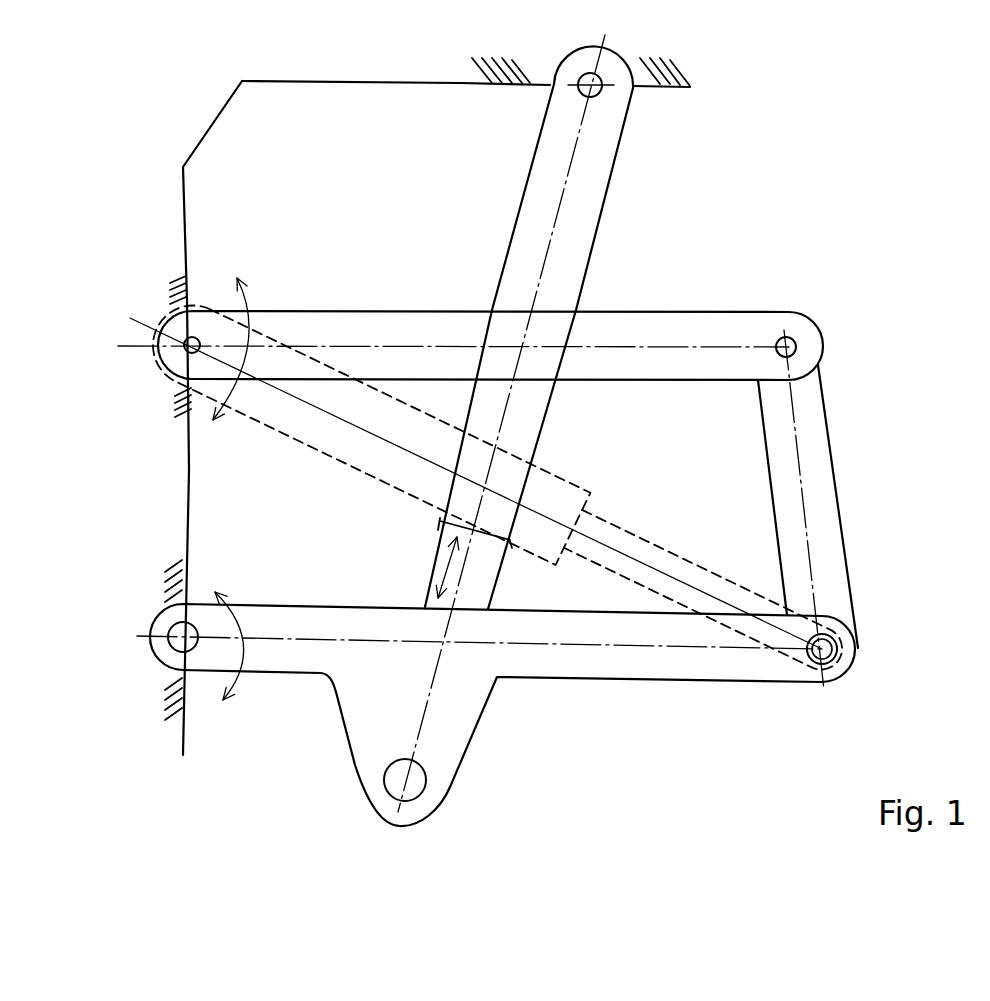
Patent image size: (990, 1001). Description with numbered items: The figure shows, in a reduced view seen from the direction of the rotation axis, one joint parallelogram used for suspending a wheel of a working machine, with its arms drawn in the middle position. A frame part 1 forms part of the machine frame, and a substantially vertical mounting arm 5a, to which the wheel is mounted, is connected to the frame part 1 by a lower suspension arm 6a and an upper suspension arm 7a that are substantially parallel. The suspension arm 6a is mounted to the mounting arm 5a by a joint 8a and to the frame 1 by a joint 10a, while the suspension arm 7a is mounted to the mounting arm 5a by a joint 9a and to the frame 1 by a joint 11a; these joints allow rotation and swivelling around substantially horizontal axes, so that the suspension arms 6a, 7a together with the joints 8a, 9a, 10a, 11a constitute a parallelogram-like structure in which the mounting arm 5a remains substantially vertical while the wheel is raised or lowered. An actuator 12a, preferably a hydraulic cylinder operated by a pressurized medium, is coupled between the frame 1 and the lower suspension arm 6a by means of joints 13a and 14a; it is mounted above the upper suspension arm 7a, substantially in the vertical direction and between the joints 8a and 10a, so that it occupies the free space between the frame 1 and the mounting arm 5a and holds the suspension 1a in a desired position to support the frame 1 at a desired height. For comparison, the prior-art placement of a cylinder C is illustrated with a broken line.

The frame part 1 is at (187, 472).
The linkage mechanism 1a is at (708, 200).
The mounting arm 5a is at (840, 573).
The lower suspension arm 6a is at (683, 663).
The upper suspension arm 7a is at (697, 331).
The joint 8a is at (836, 667).
The joint 9a is at (795, 335).
The joint 10a is at (176, 650).
The joint 11a is at (177, 353).
The actuator 12a is at (593, 160).
The joint 13a is at (425, 788).
The joint 14a is at (580, 90).
The cylinder C is at (645, 587).